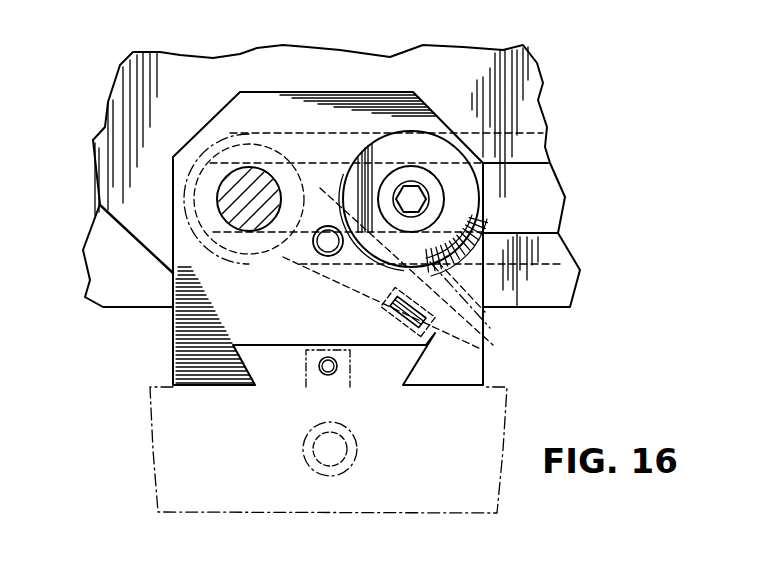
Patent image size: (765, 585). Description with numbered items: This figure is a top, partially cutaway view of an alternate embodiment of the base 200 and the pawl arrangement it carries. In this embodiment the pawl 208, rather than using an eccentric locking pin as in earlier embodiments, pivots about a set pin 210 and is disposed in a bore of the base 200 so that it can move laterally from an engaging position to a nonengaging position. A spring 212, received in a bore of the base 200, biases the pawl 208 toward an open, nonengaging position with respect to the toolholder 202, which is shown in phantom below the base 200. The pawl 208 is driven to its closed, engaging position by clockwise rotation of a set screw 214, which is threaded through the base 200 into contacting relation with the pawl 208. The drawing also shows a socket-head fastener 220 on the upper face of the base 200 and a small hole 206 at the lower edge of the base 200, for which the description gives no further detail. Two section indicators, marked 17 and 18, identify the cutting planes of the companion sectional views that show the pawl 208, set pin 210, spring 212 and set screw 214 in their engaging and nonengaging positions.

The base 200 is at (322, 97).
The toolholder 202 is at (180, 448).
The locating hole 206 is at (313, 388).
The pawl 208 is at (468, 323).
The set pin 210 is at (318, 250).
The spring 212 is at (565, 376).
The set screw 214 is at (455, 255).
The socket head bolt 220 is at (437, 157).
The section line 17- 17 is at (310, 233).
The section line 18- 18 is at (477, 164).